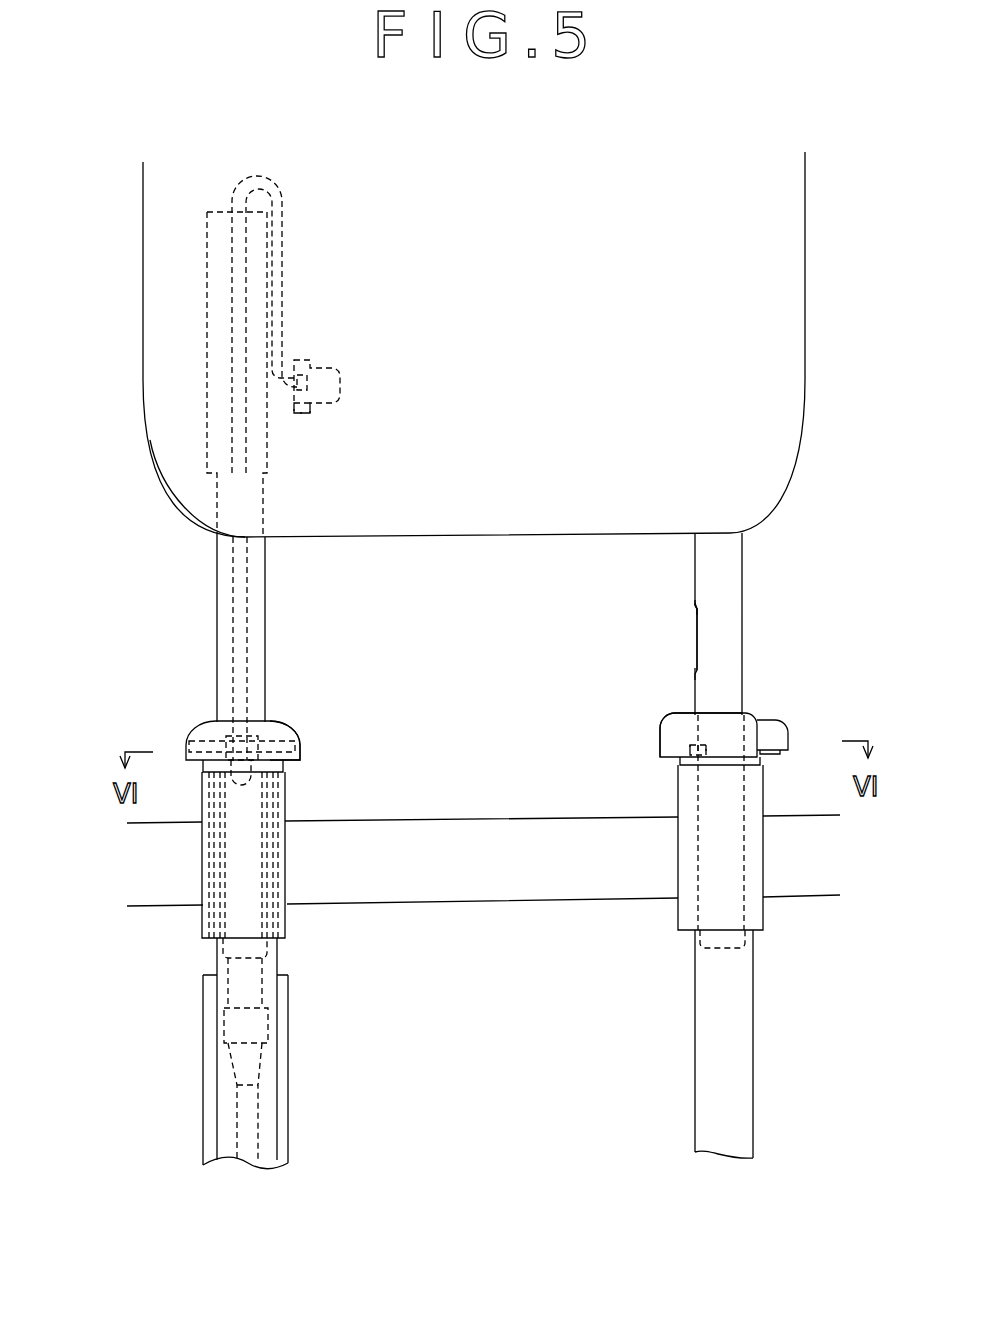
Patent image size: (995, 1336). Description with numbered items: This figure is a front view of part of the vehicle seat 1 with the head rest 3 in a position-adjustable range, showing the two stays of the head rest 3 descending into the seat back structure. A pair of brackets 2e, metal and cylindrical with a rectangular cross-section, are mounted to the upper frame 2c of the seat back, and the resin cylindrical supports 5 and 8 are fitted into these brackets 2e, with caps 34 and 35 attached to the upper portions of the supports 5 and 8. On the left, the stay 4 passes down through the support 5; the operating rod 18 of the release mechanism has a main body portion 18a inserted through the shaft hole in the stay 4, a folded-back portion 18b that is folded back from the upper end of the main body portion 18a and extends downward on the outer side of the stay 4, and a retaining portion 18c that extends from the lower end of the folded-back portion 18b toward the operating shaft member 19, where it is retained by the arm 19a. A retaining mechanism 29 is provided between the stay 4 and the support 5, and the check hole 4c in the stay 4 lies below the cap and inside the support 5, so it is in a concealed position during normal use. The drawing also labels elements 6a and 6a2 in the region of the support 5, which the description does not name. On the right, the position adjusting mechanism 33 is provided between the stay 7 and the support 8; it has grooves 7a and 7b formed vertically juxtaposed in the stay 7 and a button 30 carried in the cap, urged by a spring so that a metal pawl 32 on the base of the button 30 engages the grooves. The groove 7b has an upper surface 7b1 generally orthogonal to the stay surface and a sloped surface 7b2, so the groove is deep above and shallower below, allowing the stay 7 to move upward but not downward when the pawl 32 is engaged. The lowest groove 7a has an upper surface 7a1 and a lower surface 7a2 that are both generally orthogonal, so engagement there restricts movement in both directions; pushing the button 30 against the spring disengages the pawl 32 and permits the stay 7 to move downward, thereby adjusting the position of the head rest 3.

The vehicle seat 1 is at (147, 502).
The head rest 3 is at (182, 517).
The stay 4 is at (217, 627).
The check hole 4c is at (267, 757).
The support 5 is at (217, 960).
The fuel supply hose 6a is at (245, 1120).
The hose joint block 6a2 is at (249, 808).
The upper frame 2c is at (479, 885).
The brackets 2e is at (253, 922).
The stay 7 is at (695, 571).
The groove 7a is at (703, 748).
The upper surface 7a1 is at (695, 745).
The lower surface 7a2 is at (690, 765).
The groove 7b is at (700, 605).
The upper surface 7b1 is at (696, 608).
The sloped surface 7b2 is at (700, 622).
The support 8 is at (710, 1025).
The operating rod 18 is at (229, 341).
The main body portion 18a is at (248, 642).
The folded-back portion 18b is at (280, 258).
The retaining portion 18c is at (306, 366).
The operating shaft member 19 is at (347, 372).
The arm 19a is at (304, 416).
The retaining mechanism 29 is at (207, 732).
The button 30 is at (766, 742).
The pawl 32 is at (690, 750).
The position adjusting mechanism 33 is at (657, 660).
The cap 34 is at (290, 734).
The cap 35 is at (668, 733).